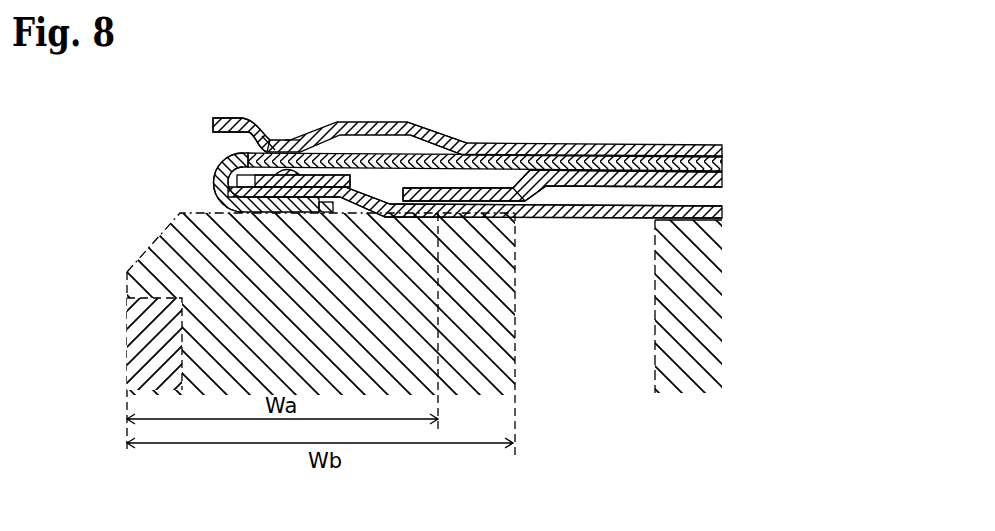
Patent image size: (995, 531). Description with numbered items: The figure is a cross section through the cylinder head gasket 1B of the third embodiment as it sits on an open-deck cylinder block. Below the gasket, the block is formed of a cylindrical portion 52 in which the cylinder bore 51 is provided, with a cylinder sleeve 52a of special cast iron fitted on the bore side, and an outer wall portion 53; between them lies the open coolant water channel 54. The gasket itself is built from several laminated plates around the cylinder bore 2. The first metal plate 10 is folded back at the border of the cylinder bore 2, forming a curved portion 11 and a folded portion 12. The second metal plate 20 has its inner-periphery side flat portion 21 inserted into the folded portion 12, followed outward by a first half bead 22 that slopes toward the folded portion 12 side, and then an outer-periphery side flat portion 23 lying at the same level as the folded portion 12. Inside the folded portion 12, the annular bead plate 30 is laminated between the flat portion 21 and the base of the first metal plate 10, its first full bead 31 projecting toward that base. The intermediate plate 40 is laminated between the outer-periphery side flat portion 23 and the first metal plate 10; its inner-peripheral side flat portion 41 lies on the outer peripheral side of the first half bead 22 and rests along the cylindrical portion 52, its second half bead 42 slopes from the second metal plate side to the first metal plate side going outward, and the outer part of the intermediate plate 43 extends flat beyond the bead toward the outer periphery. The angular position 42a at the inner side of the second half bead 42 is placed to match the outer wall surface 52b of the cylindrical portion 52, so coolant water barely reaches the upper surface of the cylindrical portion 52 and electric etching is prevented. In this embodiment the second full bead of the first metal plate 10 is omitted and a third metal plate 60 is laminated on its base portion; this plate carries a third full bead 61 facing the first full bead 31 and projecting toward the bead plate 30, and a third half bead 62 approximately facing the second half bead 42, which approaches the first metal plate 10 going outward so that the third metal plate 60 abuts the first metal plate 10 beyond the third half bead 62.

The cylinder head gasket 1B is at (550, 144).
The cylinder bore 2 is at (200, 179).
The first metal plate 10 is at (722, 165).
The curved portion 11 is at (223, 170).
The folded portion 12 is at (280, 213).
The second metal plate 20 is at (722, 212).
The inner-periphery side flat portion 21 is at (315, 213).
The first half bead 22 is at (368, 213).
The outer-periphery side flat portion 23 is at (417, 213).
The bead plate 30 is at (250, 128).
The first full bead 31 is at (274, 139).
The intermediate plate 40 is at (722, 180).
The inner-peripheral side flat portion 41 is at (483, 198).
The second half bead 42 is at (537, 187).
The position on the inner peripheral side of the sloping portion 42a is at (540, 218).
The upper portion of wiring board 43 is at (570, 178).
The cylinder bore 51 is at (95, 343).
The cylindrical portion 52 is at (405, 318).
The cylinder sleeve 52a is at (178, 346).
The outer wall surface 52b is at (515, 458).
The outer wall portion 53 is at (709, 320).
The coolant water channel 54 is at (597, 320).
The third metal plate 60 is at (722, 152).
The third full bead 61 is at (293, 148).
The third half bead 62 is at (453, 137).